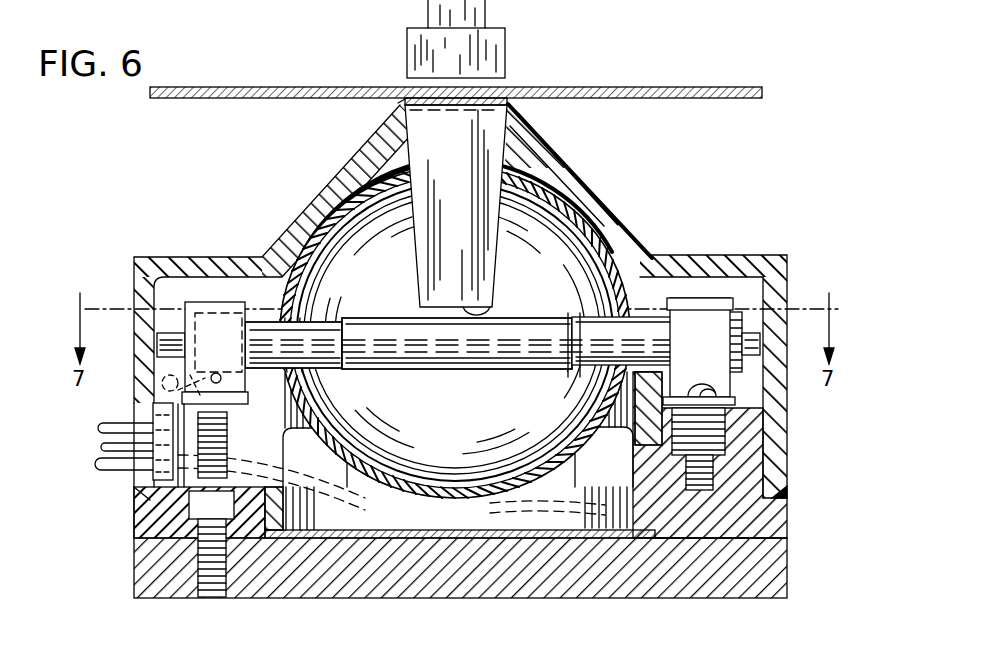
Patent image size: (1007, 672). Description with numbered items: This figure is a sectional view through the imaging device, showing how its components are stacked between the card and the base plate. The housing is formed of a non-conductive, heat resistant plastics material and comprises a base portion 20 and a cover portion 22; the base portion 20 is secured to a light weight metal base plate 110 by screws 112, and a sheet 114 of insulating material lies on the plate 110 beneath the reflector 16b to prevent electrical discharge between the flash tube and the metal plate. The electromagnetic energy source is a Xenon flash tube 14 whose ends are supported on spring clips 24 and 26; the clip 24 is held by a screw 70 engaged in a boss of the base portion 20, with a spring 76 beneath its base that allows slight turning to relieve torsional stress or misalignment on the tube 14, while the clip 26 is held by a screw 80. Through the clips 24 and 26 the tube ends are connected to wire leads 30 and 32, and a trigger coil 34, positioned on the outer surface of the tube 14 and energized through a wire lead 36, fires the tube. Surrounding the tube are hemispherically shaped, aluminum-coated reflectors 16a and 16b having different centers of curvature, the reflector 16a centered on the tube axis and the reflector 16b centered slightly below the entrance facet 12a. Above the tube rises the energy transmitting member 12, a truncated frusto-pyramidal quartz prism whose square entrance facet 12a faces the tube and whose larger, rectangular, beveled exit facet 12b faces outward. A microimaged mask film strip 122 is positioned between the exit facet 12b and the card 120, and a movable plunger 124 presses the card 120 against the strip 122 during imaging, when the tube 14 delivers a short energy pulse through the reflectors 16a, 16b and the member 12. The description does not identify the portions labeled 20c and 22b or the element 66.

The electromagnetic energy transmitting member 12 is at (487, 232).
The energy entrance facet 12a is at (497, 315).
The energy exit facet 12b is at (400, 104).
The electromagnetic energy source 14 is at (308, 318).
The hemispherically-shaped reflector 16a is at (352, 220).
The hemispherically-shaped reflector 16b is at (403, 447).
The base portion 20 is at (785, 535).
The support plate portion 20c is at (782, 508).
The cover portion 22 is at (783, 258).
The housing lower portion 22b is at (772, 480).
The spring clip 24 is at (708, 300).
The spring clip 26 is at (192, 308).
The wire lead 30 is at (100, 468).
The wire lead 32 is at (105, 444).
The trigger coil 34 is at (565, 318).
The wire lead 36 is at (105, 425).
The annular chamber 66 is at (450, 399).
The screw 70 is at (718, 385).
The spring 76 is at (765, 428).
The screw 80 is at (225, 440).
The base plate 110 is at (705, 585).
The screws 112 is at (218, 597).
The sheet of insulating material 114 is at (575, 538).
The card 120 is at (585, 87).
The microimaged mask film strip 122 is at (505, 103).
The movable plunger 124 is at (505, 42).